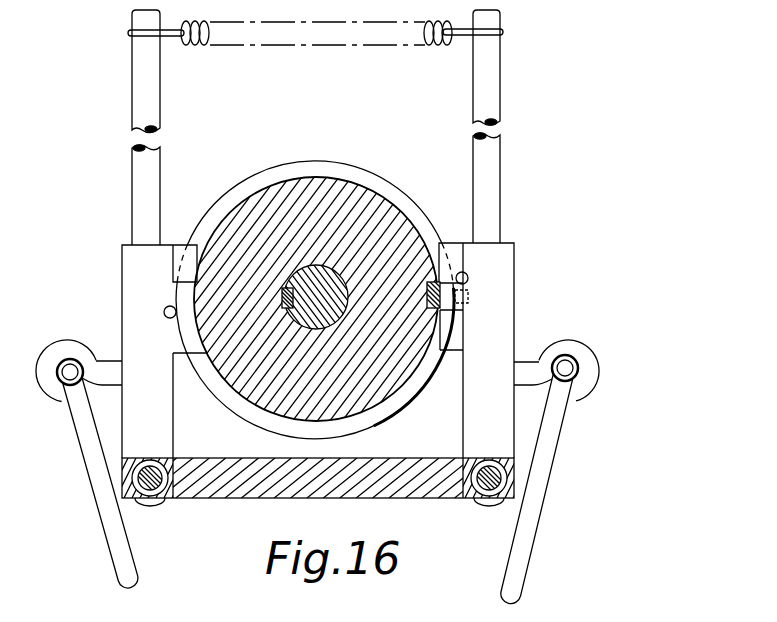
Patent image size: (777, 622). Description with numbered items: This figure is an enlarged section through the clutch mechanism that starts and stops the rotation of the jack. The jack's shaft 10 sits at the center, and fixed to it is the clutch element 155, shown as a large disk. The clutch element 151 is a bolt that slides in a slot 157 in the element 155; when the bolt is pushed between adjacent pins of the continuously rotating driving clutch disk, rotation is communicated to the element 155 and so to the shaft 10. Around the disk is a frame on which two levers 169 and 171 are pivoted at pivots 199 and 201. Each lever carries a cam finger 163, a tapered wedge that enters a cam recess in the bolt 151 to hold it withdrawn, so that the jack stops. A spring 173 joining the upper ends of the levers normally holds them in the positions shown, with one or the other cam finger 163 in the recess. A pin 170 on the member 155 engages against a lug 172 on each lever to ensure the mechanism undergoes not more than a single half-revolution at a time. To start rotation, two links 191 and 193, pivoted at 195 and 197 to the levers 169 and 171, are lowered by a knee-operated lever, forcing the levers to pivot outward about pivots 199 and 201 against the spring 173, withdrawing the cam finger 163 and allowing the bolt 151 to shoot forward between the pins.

The shaft 10 is at (297, 324).
The clutch element 151 is at (460, 243).
The clutch element 155 is at (303, 190).
The slot 157 is at (433, 290).
The cam finger 163 is at (213, 205).
The lever 169 is at (497, 222).
The pin 170 is at (468, 297).
The lever 171 is at (153, 237).
The lug 172 is at (163, 310).
The spring 173 is at (424, 38).
The link 191 is at (538, 473).
The link 193 is at (105, 505).
The pivot 195 is at (582, 386).
The pivot 197 is at (55, 392).
The pivot 199 is at (482, 504).
The pivot 201 is at (143, 503).